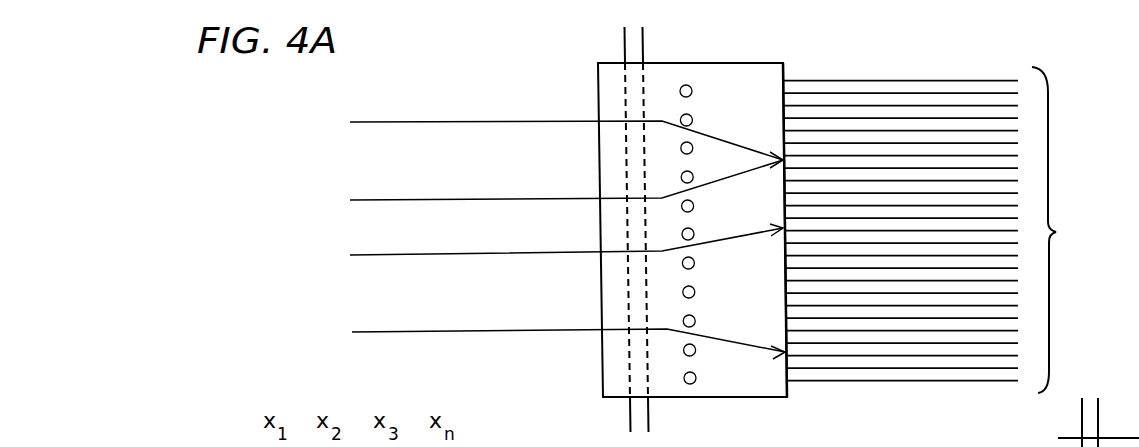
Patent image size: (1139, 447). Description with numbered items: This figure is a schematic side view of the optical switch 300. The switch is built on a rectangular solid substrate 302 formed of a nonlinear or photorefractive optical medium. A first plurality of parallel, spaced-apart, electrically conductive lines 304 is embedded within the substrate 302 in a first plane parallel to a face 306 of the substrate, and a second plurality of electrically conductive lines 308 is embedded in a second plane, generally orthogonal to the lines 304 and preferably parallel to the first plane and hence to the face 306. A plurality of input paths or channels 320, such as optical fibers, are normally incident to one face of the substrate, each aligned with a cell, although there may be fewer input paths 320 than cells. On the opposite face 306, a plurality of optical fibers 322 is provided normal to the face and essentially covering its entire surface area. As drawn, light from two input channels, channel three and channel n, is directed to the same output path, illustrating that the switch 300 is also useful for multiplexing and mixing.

The optical switch 300 is at (530, 72).
The substrate 302 is at (717, 70).
The first plurality of electrically conductive lines 304 is at (622, 45).
The face of the substrate 306 is at (787, 393).
The second plurality of electrically conductive lines 308 is at (695, 378).
The input paths 320 is at (383, 121).
The optical fibers 322 is at (1056, 232).